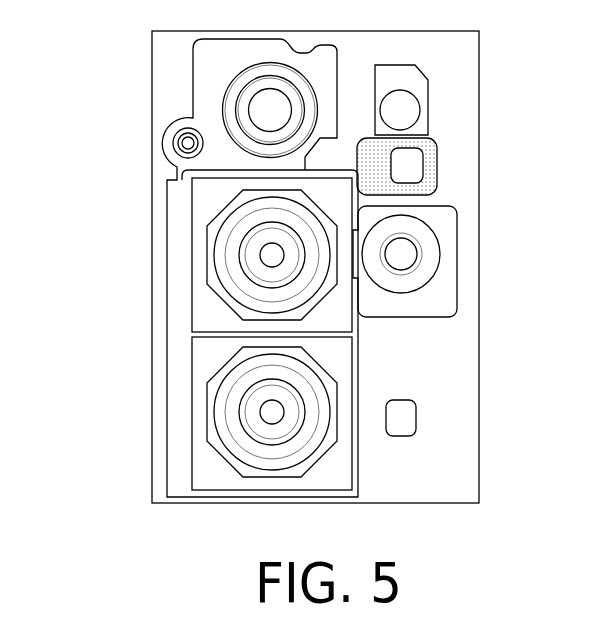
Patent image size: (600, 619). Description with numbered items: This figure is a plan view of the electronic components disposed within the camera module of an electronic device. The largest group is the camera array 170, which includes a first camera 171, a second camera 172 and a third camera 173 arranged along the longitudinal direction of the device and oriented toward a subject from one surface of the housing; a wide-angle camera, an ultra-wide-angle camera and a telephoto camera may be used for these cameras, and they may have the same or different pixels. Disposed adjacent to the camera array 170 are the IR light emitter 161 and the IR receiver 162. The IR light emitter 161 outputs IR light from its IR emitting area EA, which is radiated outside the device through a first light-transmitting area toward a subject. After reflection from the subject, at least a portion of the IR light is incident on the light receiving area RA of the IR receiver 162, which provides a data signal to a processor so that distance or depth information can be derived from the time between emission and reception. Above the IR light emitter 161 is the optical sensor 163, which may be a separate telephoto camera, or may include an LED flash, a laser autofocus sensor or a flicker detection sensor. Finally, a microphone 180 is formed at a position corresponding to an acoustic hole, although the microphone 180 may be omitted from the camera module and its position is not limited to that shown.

The camera array 170 is at (58, 429).
The first camera 171 is at (243, 115).
The second camera 172 is at (240, 268).
The third camera 173 is at (238, 410).
The IR light emitter 161 is at (432, 141).
The IR emitting area EA is at (413, 169).
The IR receiver 162 is at (442, 297).
The light receiving area RA is at (405, 248).
The optical sensor 163 is at (420, 72).
The microphone 180 is at (412, 415).